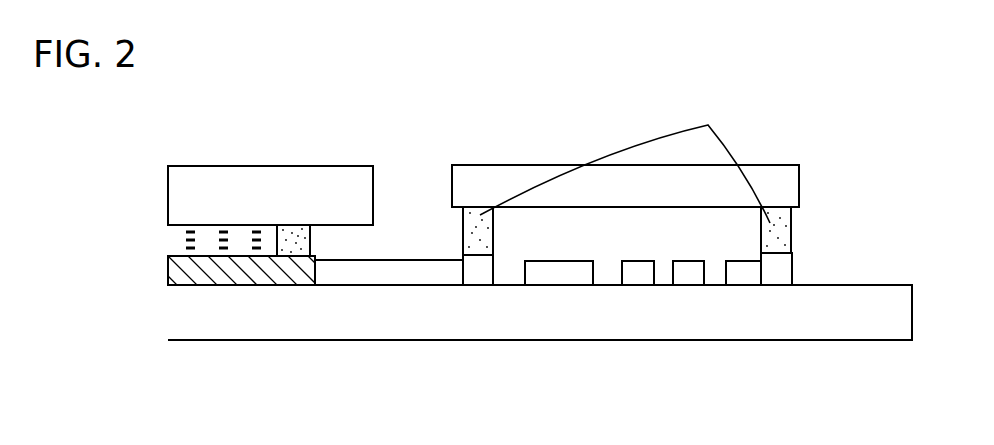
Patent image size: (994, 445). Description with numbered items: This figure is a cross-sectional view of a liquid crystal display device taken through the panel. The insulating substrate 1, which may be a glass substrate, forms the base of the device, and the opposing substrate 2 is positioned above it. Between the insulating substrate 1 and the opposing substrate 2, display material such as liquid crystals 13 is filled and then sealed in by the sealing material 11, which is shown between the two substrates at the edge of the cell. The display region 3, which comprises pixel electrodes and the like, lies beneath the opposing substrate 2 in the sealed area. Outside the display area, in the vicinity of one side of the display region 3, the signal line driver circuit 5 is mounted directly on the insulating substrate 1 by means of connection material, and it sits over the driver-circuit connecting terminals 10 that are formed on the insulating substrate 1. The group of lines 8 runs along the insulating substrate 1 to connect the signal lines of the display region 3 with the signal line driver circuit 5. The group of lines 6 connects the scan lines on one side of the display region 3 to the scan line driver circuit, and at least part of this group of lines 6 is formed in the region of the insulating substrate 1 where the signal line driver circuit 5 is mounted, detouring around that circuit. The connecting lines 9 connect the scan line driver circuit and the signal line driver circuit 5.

The insulating substrate 1 is at (475, 320).
The opposing substrate 2 is at (290, 190).
The display region 3 is at (175, 270).
The signal line driver circuit 5 is at (770, 178).
The group of lines 6 is at (563, 272).
The group of lines 8 is at (388, 270).
The connecting lines 9 is at (633, 273).
The driver-circuit connecting terminals 10 is at (777, 268).
The sealing material 11 is at (298, 238).
The liquid crystals 13 is at (208, 237).